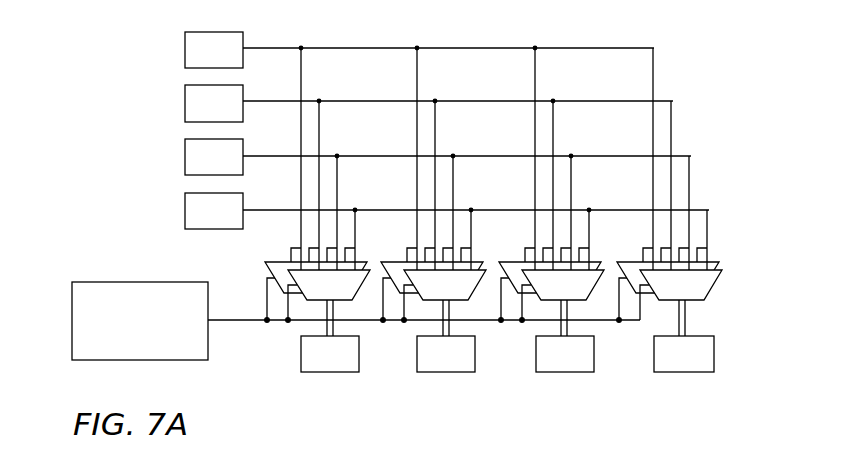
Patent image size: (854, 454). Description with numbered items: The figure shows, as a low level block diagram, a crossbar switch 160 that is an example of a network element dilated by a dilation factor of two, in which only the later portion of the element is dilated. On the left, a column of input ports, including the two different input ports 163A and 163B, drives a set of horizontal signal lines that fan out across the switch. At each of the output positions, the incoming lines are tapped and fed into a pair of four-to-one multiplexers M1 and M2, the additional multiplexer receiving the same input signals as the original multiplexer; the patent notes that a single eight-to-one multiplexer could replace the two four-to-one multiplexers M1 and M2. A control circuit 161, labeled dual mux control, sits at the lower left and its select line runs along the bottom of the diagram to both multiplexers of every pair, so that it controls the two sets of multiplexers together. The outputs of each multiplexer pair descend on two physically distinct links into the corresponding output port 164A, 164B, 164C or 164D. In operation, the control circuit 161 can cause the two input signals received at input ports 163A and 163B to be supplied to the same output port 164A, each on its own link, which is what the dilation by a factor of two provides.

The crossbar switch 160 is at (116, 140).
The control circuit 161 is at (87, 290).
The input port 163A is at (187, 61).
The input port 163B is at (187, 116).
The output port 164A is at (347, 366).
The output port 164B is at (464, 366).
The output port 164C is at (582, 366).
The output port 164D is at (702, 366).
The four-to-one multiplexer M1 is at (714, 285).
The four-to-one multiplexer M2 is at (716, 261).